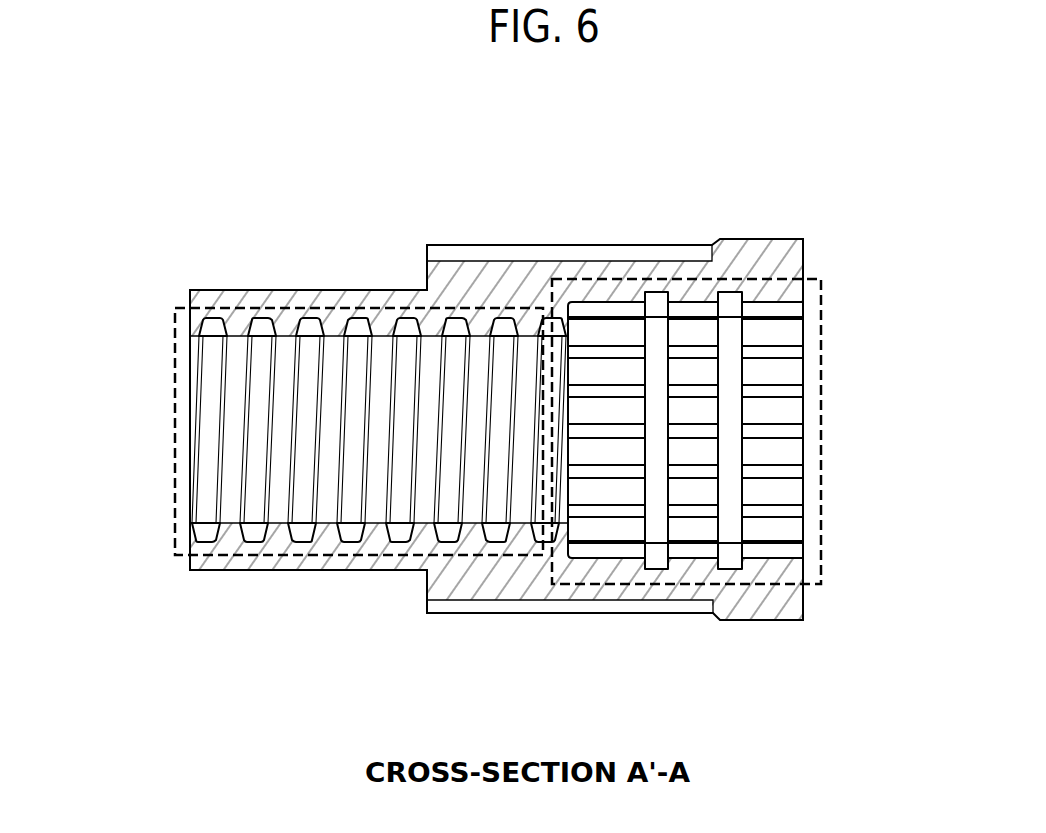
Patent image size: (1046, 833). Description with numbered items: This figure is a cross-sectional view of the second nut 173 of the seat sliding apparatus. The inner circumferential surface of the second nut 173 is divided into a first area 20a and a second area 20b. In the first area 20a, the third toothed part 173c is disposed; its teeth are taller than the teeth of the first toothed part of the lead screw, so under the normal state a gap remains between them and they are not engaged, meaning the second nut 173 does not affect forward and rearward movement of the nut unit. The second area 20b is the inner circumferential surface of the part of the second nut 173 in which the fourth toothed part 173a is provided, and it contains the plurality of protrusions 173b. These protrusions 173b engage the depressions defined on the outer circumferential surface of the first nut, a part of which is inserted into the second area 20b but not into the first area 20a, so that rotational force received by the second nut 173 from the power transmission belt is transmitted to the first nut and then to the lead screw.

The second nut 173 is at (498, 446).
The fourth toothed part 173a is at (578, 257).
The protrusions 173b is at (788, 412).
The third toothed part 173c is at (222, 442).
The first area 20a is at (175, 319).
The second area 20b is at (821, 305).